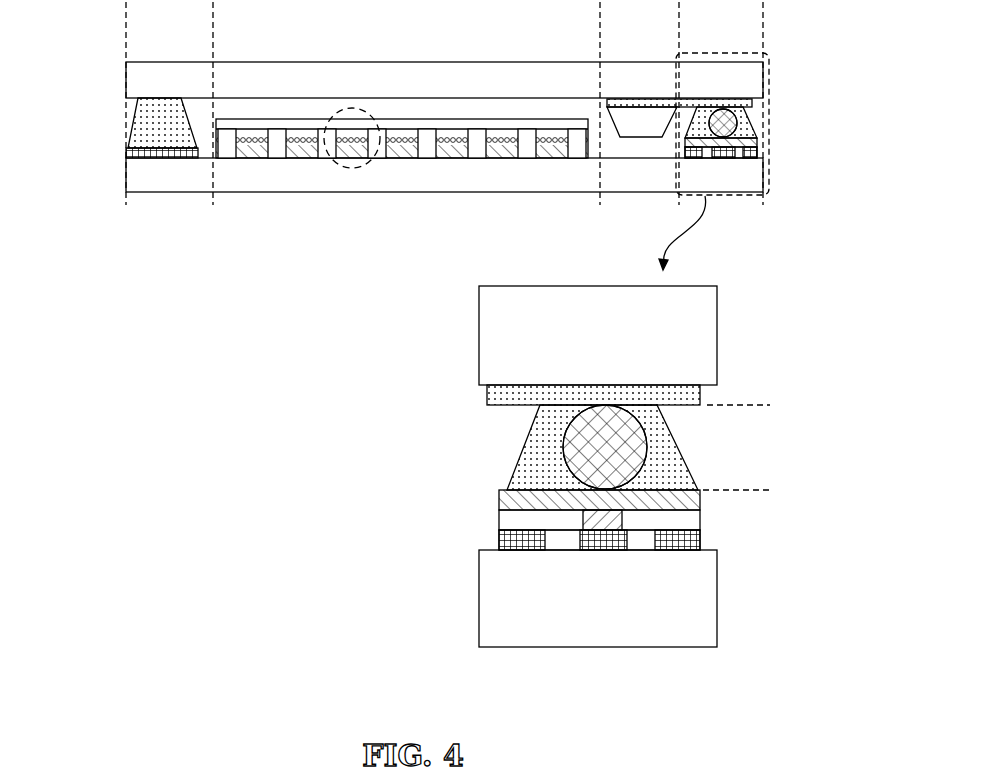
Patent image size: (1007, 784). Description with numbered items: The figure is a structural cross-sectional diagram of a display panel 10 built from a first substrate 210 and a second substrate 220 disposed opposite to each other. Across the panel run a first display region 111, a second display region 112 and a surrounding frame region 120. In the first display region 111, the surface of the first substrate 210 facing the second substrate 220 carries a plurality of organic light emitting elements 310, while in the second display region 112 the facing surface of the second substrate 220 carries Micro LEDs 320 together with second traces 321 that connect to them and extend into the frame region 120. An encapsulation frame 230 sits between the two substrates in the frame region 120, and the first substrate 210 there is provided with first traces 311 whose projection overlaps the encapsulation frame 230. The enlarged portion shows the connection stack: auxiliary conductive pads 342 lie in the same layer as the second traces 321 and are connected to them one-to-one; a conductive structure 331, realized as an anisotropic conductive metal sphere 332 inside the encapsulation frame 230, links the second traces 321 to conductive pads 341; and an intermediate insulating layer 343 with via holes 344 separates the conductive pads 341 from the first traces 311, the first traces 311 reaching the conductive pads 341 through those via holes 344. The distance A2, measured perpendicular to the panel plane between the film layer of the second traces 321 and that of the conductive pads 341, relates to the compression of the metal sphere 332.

The display panel 10 is at (80, 37).
The frame region 120 is at (97, 25).
The first display region 111 is at (213, 48).
The second display region 112 is at (571, 33).
The second substrate 220 is at (126, 80).
The first substrate 210 is at (126, 180).
The organic light emitting element 310 is at (350, 168).
The Micro LED 320 is at (641, 137).
The second trace 321 is at (532, 393).
The auxiliary conductive pad 342 is at (487, 389).
The conductive metal sphere 332 is at (505, 447).
The conductive structure 331 is at (566, 447).
The encapsulation frame 230 is at (508, 472).
The conductive pad 341 is at (499, 497).
The intermediate insulating layer 343 is at (499, 518).
The via hole 344 is at (622, 519).
The first trace 311 is at (499, 540).
The distance A2 is at (763, 405).